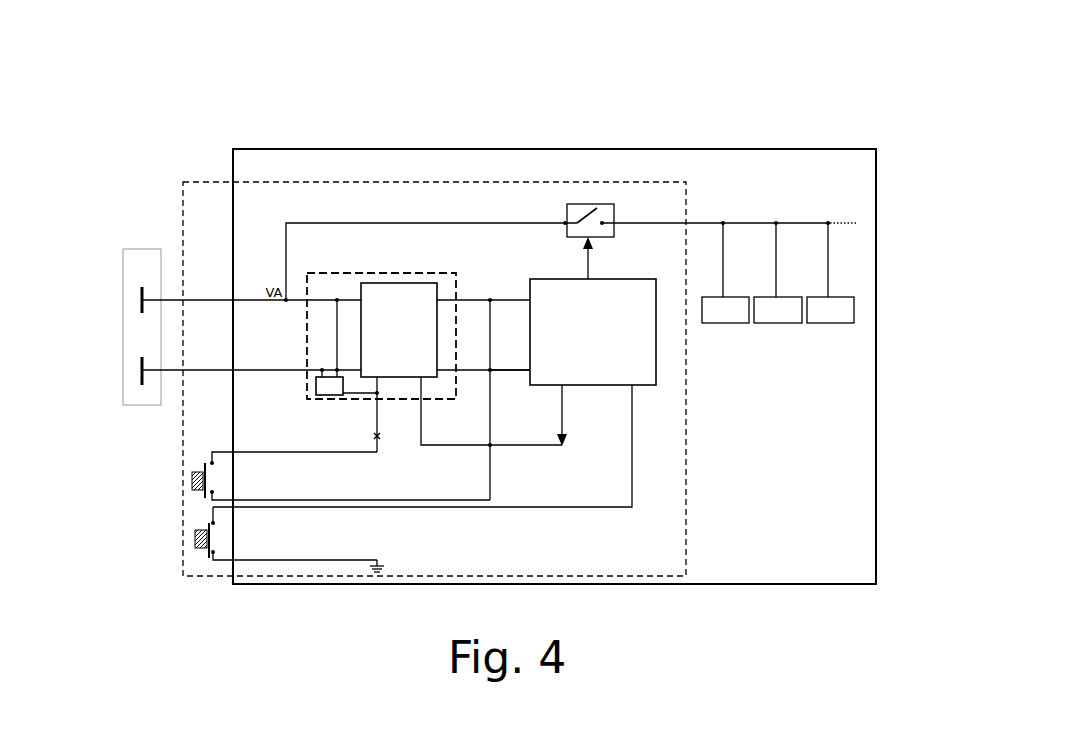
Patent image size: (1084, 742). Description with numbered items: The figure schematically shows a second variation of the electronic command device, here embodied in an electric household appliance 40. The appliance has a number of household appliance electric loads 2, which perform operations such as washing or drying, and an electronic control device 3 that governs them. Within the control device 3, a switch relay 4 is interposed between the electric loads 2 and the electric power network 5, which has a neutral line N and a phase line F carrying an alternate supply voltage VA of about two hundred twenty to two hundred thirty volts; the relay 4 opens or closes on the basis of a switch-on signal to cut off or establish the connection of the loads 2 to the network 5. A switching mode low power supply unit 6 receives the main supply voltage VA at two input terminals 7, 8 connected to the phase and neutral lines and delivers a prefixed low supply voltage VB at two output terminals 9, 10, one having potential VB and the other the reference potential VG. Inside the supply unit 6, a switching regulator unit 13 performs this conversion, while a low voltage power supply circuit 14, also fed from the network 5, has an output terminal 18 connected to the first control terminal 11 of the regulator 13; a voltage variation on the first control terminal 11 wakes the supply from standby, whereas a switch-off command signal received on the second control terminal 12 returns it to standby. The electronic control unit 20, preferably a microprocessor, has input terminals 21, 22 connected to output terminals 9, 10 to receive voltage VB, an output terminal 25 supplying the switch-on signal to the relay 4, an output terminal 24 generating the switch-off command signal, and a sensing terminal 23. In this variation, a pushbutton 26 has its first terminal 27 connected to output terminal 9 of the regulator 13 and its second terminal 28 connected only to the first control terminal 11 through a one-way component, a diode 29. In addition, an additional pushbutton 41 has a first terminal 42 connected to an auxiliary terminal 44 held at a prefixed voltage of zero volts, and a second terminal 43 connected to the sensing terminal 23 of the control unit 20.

The household appliance electric loads 2 is at (729, 272).
The electronic control device 3 is at (500, 182).
The switch relay 4 is at (587, 204).
The electric power network 5 is at (147, 248).
The switching mode low power supply unit 6 is at (373, 273).
The input terminal 7 is at (286, 297).
The input terminal 8 is at (283, 371).
The output terminal 9 is at (477, 308).
The output terminal 10 is at (482, 371).
The first control terminal 11 is at (377, 402).
The second control terminal 12 is at (422, 413).
The switching regulator unit 13 is at (399, 330).
The low voltage power supply circuit 14 is at (323, 395).
The output terminal 18 is at (364, 393).
The electronic control unit 20 is at (593, 332).
The input terminal 21 is at (507, 297).
The input terminal 22 is at (515, 374).
The sensing terminal 23 is at (633, 403).
The output terminal 24 is at (557, 400).
The output terminal 25 is at (586, 273).
The pushbutton 26 is at (190, 479).
The first terminal 27 is at (212, 499).
The second terminal 28 is at (213, 457).
The diode 29 is at (380, 440).
The electric household appliance 40 is at (727, 149).
The additional pushbutton 41 is at (195, 540).
The first terminal 42 is at (212, 513).
The second terminal 43 is at (212, 556).
The auxiliary terminal 44 is at (370, 560).